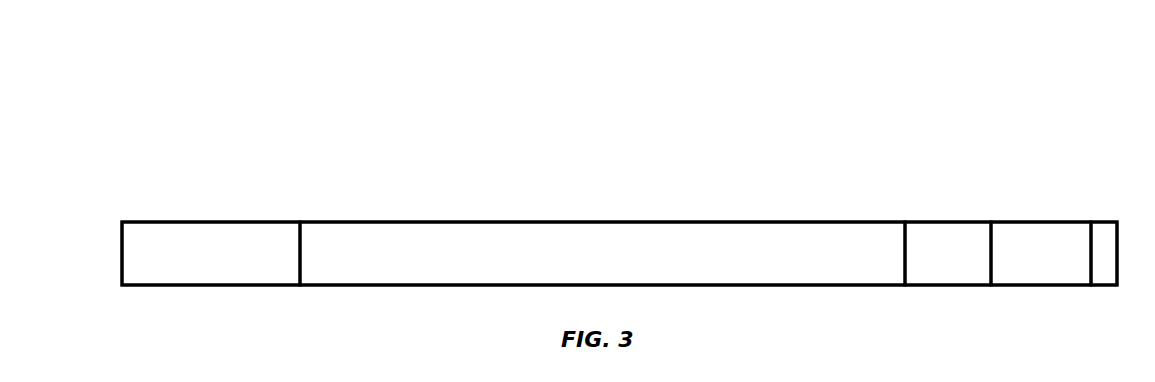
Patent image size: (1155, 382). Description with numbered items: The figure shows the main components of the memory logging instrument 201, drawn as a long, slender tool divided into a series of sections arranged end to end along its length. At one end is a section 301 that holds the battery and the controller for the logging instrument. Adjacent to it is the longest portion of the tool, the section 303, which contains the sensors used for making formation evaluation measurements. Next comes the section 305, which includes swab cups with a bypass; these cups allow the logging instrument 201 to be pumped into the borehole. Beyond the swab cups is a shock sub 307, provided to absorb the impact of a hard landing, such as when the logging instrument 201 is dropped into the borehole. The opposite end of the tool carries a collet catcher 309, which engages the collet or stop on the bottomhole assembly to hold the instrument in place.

The logging instrument 201 is at (228, 74).
The section for battery and controller 301 is at (222, 222).
The sensor section 303 is at (575, 222).
The swab cup section 305 is at (931, 222).
The shock sub 307 is at (1027, 222).
The collet catcher 309 is at (1107, 222).